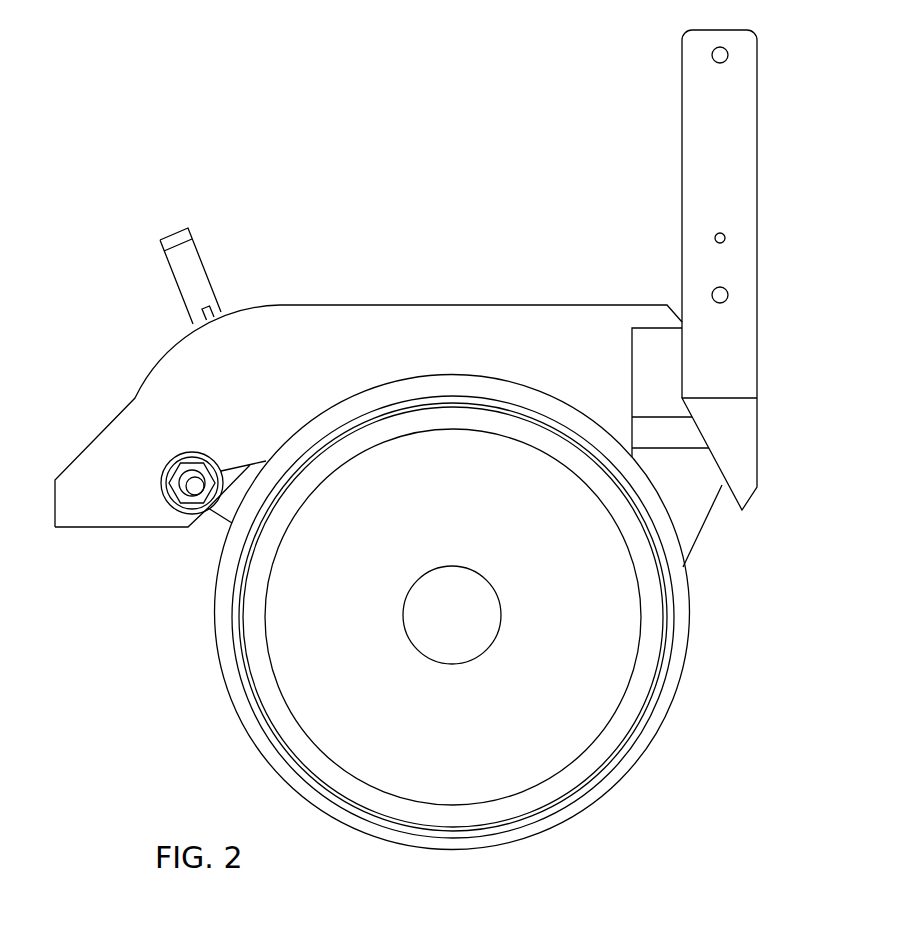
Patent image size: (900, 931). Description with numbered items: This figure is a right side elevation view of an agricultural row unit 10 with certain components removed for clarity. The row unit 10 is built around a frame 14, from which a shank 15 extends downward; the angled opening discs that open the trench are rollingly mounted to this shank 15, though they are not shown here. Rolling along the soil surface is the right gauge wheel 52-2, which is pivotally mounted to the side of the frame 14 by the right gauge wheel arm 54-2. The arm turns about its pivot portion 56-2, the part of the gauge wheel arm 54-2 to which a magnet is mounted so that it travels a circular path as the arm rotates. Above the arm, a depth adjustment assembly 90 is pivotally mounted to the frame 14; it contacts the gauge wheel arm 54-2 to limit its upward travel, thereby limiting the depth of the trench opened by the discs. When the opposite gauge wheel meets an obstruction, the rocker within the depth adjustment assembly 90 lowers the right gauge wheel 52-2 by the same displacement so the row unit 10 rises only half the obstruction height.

The row unit 10 is at (849, 152).
The frame 14 is at (487, 305).
The shank 15 is at (705, 530).
The depth adjustment assembly 90 is at (168, 232).
The pivot portion 56-2 is at (163, 455).
The right gauge wheel arm 54-2 is at (218, 528).
The right gauge wheel 52-2 is at (595, 620).